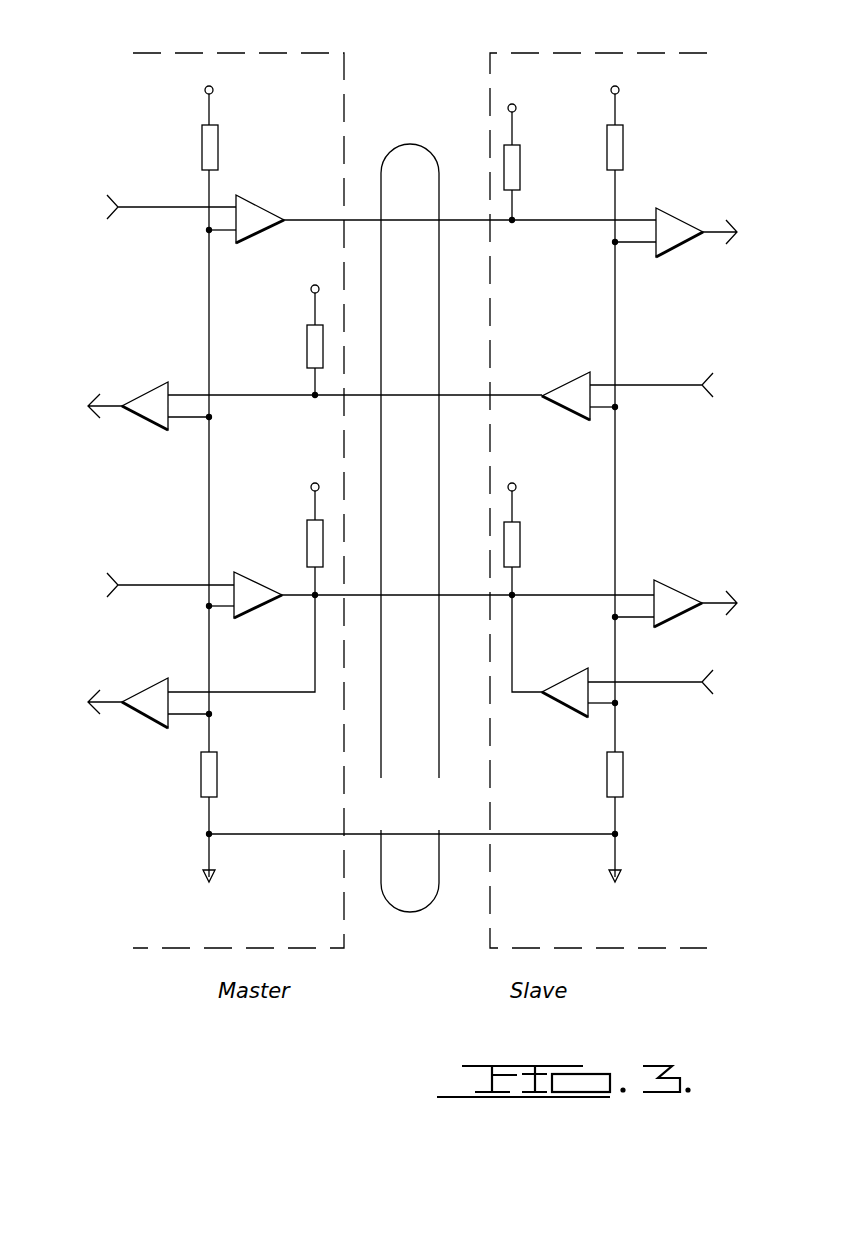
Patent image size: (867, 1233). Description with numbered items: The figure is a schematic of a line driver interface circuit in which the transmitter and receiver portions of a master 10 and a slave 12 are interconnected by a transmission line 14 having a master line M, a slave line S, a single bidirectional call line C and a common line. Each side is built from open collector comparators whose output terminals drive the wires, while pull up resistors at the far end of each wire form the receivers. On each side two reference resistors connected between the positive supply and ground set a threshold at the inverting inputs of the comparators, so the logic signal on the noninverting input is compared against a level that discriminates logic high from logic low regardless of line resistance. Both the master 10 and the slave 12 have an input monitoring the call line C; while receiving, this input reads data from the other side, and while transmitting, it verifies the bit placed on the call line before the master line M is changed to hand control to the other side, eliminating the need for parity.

The master 10 is at (237, 53).
The slave 12 is at (539, 53).
The transmission line 14 is at (400, 144).